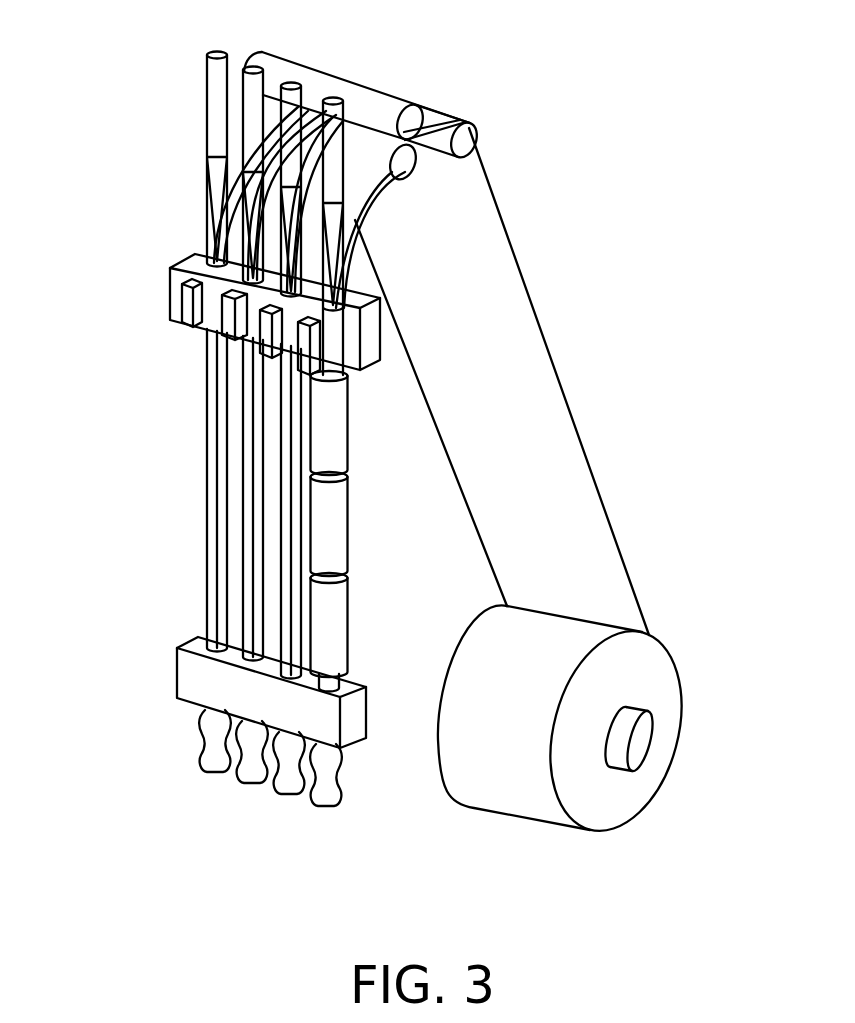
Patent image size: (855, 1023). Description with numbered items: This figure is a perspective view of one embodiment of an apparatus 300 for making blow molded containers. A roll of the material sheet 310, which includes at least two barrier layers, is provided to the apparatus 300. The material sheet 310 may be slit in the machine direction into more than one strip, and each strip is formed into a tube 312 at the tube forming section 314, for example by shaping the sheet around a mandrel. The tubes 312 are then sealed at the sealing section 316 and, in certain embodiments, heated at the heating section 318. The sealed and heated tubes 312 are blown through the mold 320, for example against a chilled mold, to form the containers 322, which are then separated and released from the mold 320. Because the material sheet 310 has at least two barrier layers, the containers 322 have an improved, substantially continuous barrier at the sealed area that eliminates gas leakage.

The apparatus 300 is at (499, 66).
The material sheet 310 is at (648, 671).
The tubes 312 is at (218, 258).
The tube forming section 314 is at (198, 133).
The sealing section 316 is at (178, 323).
The heating section 318 is at (352, 390).
The mold 320 is at (192, 677).
The containers 322 is at (213, 758).